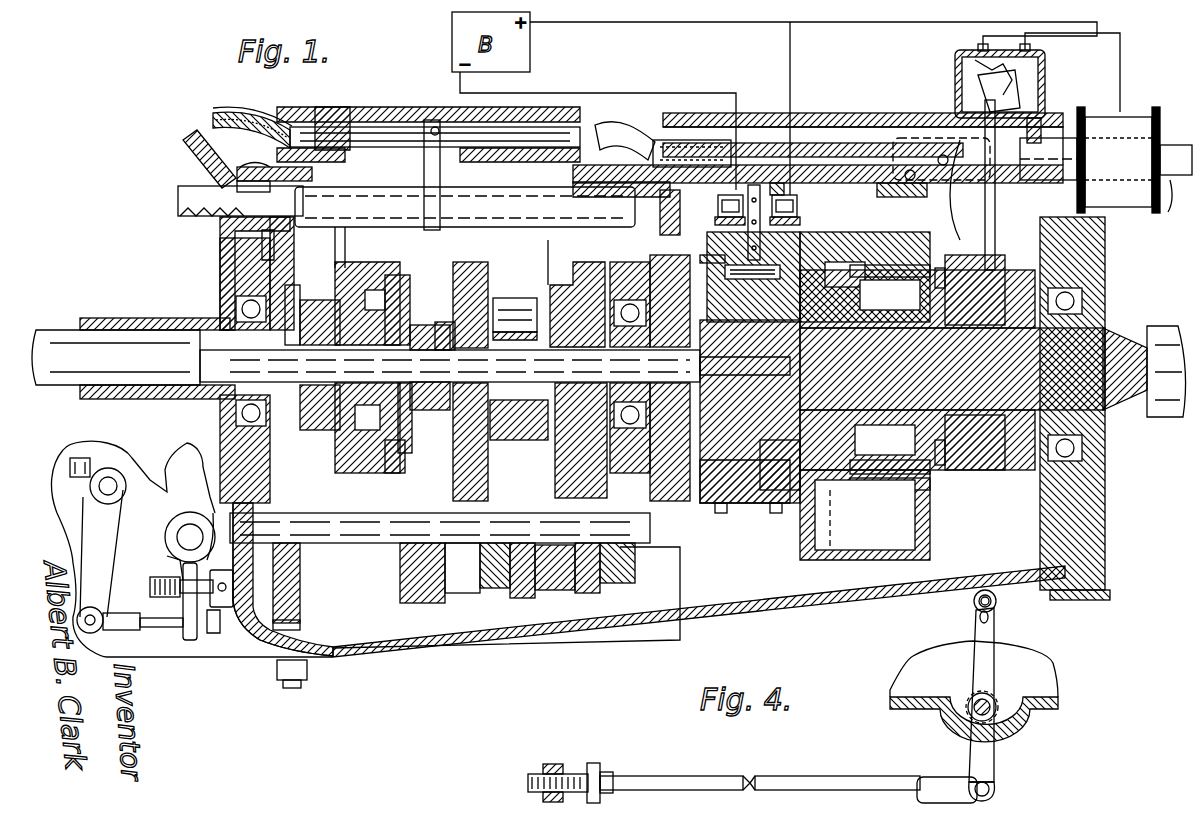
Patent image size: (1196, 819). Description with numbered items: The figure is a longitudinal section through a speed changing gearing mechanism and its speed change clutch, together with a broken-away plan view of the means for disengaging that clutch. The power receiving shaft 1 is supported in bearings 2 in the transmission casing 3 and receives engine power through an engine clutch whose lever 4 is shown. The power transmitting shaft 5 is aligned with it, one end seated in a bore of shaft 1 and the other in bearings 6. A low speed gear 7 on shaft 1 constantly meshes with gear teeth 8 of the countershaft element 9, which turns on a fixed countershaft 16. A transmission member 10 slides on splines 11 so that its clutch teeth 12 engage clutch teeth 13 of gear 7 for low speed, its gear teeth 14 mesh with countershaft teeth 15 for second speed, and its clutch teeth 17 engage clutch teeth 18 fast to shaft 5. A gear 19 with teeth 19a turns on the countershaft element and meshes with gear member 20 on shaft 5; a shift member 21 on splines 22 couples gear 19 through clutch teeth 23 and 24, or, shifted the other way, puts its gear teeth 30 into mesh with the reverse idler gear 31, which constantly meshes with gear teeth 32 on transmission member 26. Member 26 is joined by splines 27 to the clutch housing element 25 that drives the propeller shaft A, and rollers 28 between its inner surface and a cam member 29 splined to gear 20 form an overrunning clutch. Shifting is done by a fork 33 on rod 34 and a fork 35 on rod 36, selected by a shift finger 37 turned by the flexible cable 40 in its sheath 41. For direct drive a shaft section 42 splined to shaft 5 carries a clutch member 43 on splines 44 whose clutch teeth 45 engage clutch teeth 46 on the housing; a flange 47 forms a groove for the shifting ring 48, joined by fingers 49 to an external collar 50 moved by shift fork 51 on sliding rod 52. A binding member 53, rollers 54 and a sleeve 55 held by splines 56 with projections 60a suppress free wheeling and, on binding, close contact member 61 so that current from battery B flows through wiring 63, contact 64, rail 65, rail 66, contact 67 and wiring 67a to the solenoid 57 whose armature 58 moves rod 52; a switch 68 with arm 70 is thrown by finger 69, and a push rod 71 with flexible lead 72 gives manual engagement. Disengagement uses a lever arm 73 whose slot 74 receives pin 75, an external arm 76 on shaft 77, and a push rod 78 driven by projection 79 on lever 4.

In FIG. 1, the transmission power receiving shaft 1 is at (56, 332).
In FIG. 1, the bearings 2 is at (222, 284).
In FIG. 1, the transmission casing 3 is at (384, 107).
In FIG. 4, the transmission casing 3 is at (908, 708).
In FIG. 1, the engine clutch lever 4 is at (170, 465).
In FIG. 1, the power transmitting shaft 5 is at (330, 352).
In FIG. 1, the bearings 6 is at (652, 298).
In FIG. 1, the transmission gear member 7 is at (278, 273).
In FIG. 1, the gear teeth 8 is at (300, 625).
In FIG. 1, the countershaft transmission element 9 is at (355, 570).
In FIG. 1, the transmission member 10 is at (366, 275).
In FIG. 1, the splines 11 is at (392, 325).
In FIG. 1, the clutch teeth 12 is at (318, 296).
In FIG. 1, the clutch teeth 13 is at (297, 300).
In FIG. 1, the gear teeth 14 is at (375, 460).
In FIG. 1, the gear teeth 15 is at (415, 418).
In FIG. 1, the fixed countershaft 16 is at (650, 530).
In FIG. 1, the clutch teeth 17 is at (397, 456).
In FIG. 1, the clutch teeth 18 is at (441, 322).
In FIG. 1, the gear 19 is at (473, 580).
In FIG. 1, the gear teeth 19a is at (450, 595).
In FIG. 1, the gear member 20 is at (458, 268).
In FIG. 1, the shift member 21 is at (584, 576).
In FIG. 1, the splines 22 is at (612, 555).
In FIG. 1, the clutch teeth 23 is at (522, 580).
In FIG. 1, the clutch teeth 24 is at (495, 571).
In FIG. 1, the housing element 25 is at (888, 540).
In FIG. 1, the transmission member 26 is at (612, 268).
In FIG. 1, the splines 27 is at (688, 410).
In FIG. 1, the rollers 28 is at (525, 310).
In FIG. 1, the cam member 29 is at (525, 440).
In FIG. 1, the gear teeth 30 is at (555, 581).
In FIG. 1, the reverse idler gear 31 is at (590, 455).
In FIG. 1, the gear teeth 32 is at (572, 268).
In FIG. 1, the shift fork 33 is at (546, 262).
In FIG. 1, the sliding shift rod 34 is at (676, 212).
In FIG. 1, the shift fork 35 is at (340, 241).
In FIG. 1, the shift rod 36 is at (183, 190).
In FIG. 1, the shift finger 37 is at (424, 160).
In FIG. 1, the flexible cable 40 is at (213, 108).
In FIG. 1, the sheath 41 is at (252, 110).
In FIG. 1, the shaft section 42 is at (1020, 408).
In FIG. 1, the clutch member 43 is at (835, 245).
In FIG. 1, the splines 44 is at (898, 322).
In FIG. 1, the clutch teeth 45 is at (840, 540).
In FIG. 1, the clutch teeth 46 is at (902, 262).
In FIG. 1, the flange 47 is at (874, 455).
In FIG. 1, the shifting ring 48 is at (890, 475).
In FIG. 1, the fingers 49 is at (928, 470).
In FIG. 1, the external collar 50 is at (1002, 268).
In FIG. 1, the shift fork 51 is at (996, 210).
In FIG. 1, the sliding shift rod 52 is at (845, 125).
In FIG. 1, the central binding member 53 is at (708, 468).
In FIG. 1, the roller binding elements 54 is at (725, 272).
In FIG. 1, the sleeve 55 is at (755, 503).
In FIG. 1, the splines 56 is at (708, 250).
In FIG. 1, the solenoid 57 is at (1130, 128).
In FIG. 1, the armature 58 is at (1170, 207).
In FIG. 1, the projections 60a is at (789, 465).
In FIG. 1, the contact member 61 is at (760, 185).
In FIG. 1, the conducting wiring 63 is at (612, 92).
In FIG. 1, the spring tensioned contact member 64 is at (718, 198).
In FIG. 1, the insulated rail 65 is at (715, 222).
In FIG. 1, the rail 66 is at (798, 210).
In FIG. 1, the spring tensioned contact member 67 is at (790, 190).
In FIG. 1, the wiring 67a is at (792, 60).
In FIG. 1, the switch 68 is at (1040, 75).
In FIG. 1, the finger 69 is at (999, 91).
In FIG. 1, the switch arm 70 is at (1003, 62).
In FIG. 1, the push rod 71 is at (660, 140).
In FIG. 1, the flexible control lead 72 is at (600, 132).
In FIG. 1, the lever arm 73 is at (877, 188).
In FIG. 4, the lever arm 73 is at (996, 634).
In FIG. 1, the slot 74 is at (941, 159).
In FIG. 4, the slot 74 is at (978, 620).
In FIG. 1, the pin 75 is at (908, 164).
In FIG. 4, the pin 75 is at (996, 601).
In FIG. 4, the external lever arm 76 is at (996, 762).
In FIG. 4, the shaft 77 is at (996, 712).
In FIG. 1, the push rod 78 is at (158, 577).
In FIG. 4, the push rod 78 is at (658, 776).
In FIG. 1, the projection 79 is at (220, 634).
In FIG. 4, the projection 79 is at (552, 766).
In FIG. 1, the propeller shaft A is at (1162, 326).